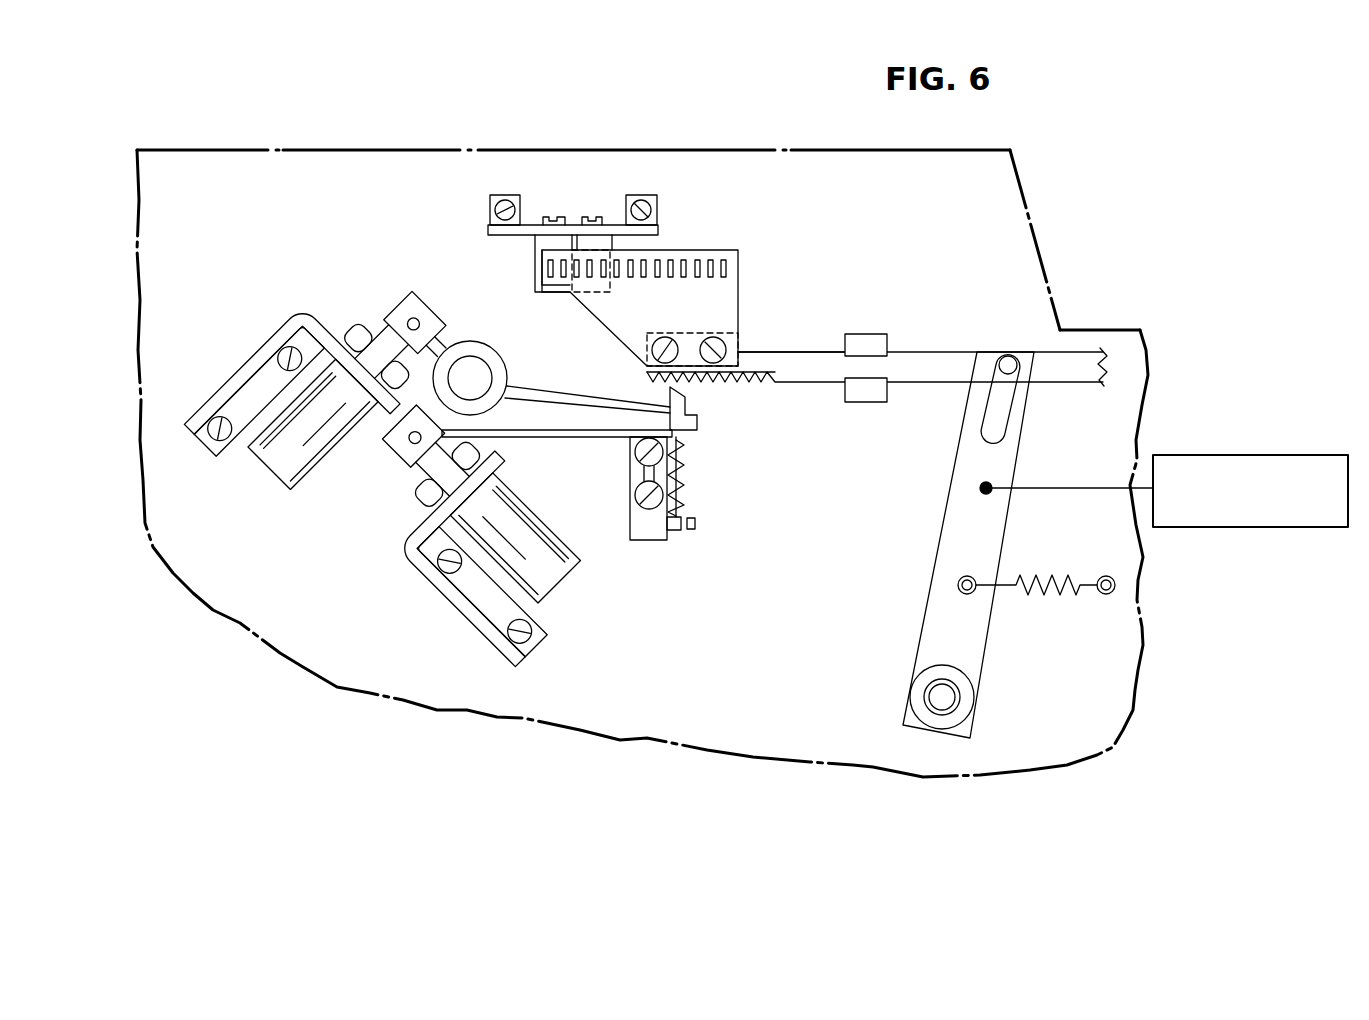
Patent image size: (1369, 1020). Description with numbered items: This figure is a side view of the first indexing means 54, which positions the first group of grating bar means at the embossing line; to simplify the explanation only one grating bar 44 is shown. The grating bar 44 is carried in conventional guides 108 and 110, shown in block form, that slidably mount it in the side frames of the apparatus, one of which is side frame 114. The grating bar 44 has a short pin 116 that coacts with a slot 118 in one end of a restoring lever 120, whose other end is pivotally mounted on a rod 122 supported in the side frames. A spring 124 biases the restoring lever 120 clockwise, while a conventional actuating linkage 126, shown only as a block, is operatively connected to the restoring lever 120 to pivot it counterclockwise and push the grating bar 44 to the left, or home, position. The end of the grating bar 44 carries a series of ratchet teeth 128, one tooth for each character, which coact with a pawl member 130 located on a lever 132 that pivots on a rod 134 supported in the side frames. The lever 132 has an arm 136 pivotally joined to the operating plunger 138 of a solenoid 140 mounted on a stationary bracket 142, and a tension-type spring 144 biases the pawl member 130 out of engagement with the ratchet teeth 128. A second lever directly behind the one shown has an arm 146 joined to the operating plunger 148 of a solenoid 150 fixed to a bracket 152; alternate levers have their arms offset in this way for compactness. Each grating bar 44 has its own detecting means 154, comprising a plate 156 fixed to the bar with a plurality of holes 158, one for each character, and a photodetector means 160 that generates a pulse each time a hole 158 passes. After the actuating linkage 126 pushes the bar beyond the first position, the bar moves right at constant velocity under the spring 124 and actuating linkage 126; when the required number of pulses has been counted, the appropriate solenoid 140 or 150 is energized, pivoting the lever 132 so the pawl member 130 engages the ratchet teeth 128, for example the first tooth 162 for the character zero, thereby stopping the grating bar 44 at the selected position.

The first indexing means 54 is at (415, 172).
The side frame 114 is at (1012, 205).
The photodetector means 160 is at (597, 238).
The detecting means 154 is at (702, 246).
The holes 158 is at (716, 264).
The plate 156 is at (730, 300).
The grating bar 44 is at (938, 356).
The first tooth 162 is at (775, 357).
The ratchet teeth 128 is at (752, 380).
The guide 108 is at (866, 345).
The guide 110 is at (873, 388).
The restoring lever 120 is at (1010, 475).
The slot 118 is at (1006, 417).
The short pin 116 is at (1010, 363).
The rod 122 is at (947, 695).
The spring 124 is at (1046, 590).
The actuating linkage 126 is at (1192, 527).
The solenoid 150 is at (265, 468).
The bracket 152 is at (250, 375).
The operating plunger 148 is at (385, 340).
The arm 146 is at (438, 338).
The solenoid 140 is at (572, 570).
The bracket 142 is at (443, 594).
The operating plunger 138 is at (435, 464).
The arm 136 is at (423, 417).
The rod 134 is at (472, 376).
The lever 132 is at (560, 396).
The pawl member 130 is at (672, 412).
The tension-type spring 144 is at (690, 500).